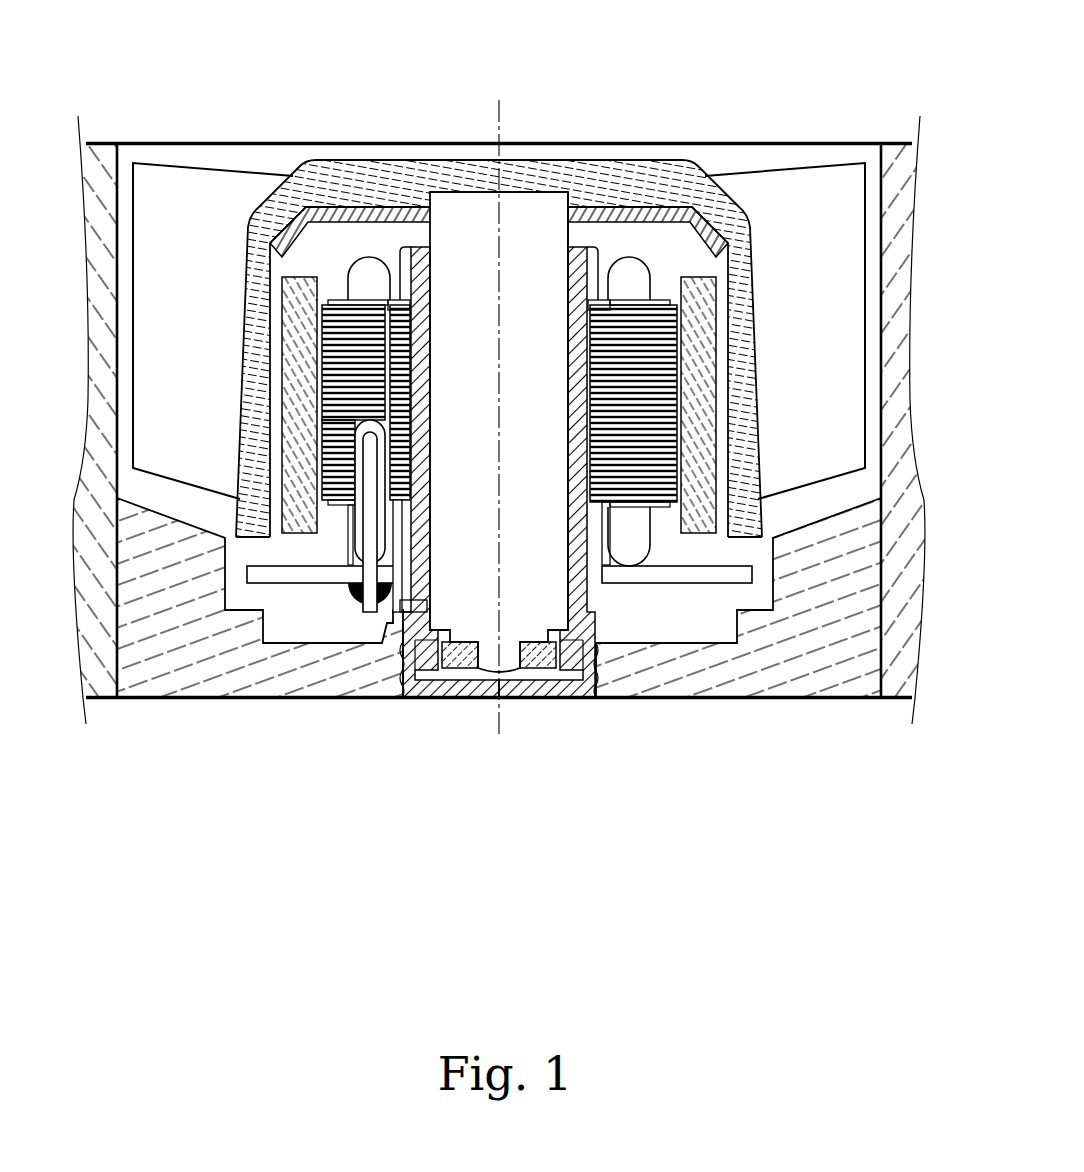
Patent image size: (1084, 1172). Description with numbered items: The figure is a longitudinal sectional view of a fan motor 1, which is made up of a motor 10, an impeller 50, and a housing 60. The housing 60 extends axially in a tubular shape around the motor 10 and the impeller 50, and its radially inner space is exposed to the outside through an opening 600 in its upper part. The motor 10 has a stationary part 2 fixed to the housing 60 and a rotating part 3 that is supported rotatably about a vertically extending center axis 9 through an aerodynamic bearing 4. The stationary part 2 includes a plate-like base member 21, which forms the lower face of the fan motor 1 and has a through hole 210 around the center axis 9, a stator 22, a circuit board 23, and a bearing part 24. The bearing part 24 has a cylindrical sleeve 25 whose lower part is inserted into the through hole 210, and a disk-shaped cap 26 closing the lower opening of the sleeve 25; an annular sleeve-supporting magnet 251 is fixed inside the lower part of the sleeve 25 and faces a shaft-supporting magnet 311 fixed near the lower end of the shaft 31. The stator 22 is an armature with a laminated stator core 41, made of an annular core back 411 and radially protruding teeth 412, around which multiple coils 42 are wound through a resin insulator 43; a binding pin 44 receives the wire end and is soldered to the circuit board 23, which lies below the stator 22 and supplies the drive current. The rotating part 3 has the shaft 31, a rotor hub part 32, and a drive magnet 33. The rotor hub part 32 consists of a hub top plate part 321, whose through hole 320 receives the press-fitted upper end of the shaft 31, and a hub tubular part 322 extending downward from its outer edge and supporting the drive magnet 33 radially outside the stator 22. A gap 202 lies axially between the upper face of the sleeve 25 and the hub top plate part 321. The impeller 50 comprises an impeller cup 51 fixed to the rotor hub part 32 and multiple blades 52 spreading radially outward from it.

The fan motor 1 is at (688, 85).
The stationary part 2 is at (666, 622).
The rotating part 3 is at (608, 242).
The aerodynamic bearing 4 is at (434, 520).
The center axis 9 is at (480, 399).
The motor 10 is at (385, 217).
The base member 21 is at (170, 670).
The stator 22 is at (322, 640).
The circuit board 23 is at (710, 578).
The bearing part 24 is at (562, 530).
The sleeve 25 is at (591, 612).
The cap 26 is at (577, 632).
The shaft 31 is at (517, 223).
The rotor hub part 32 is at (460, 271).
The drive magnet 33 is at (703, 383).
The stator core 41 is at (349, 510).
The coil 42 is at (345, 567).
The insulator 43 is at (397, 616).
The binding pin 44 is at (371, 614).
The impeller 50 is at (160, 158).
The impeller cup 51 is at (387, 240).
The blade 52 is at (817, 205).
The housing 60 is at (893, 170).
The gap 202 is at (581, 240).
The through hole 210 is at (523, 677).
The sleeve-supporting magnet 251 is at (426, 656).
The shaft-supporting magnet 311 is at (547, 652).
The through hole 320 is at (448, 208).
The hub top plate part 321 is at (338, 207).
The hub tubular part 322 is at (266, 300).
The core back 411 is at (356, 572).
The teeth 412 is at (349, 598).
The opening 600 is at (758, 141).